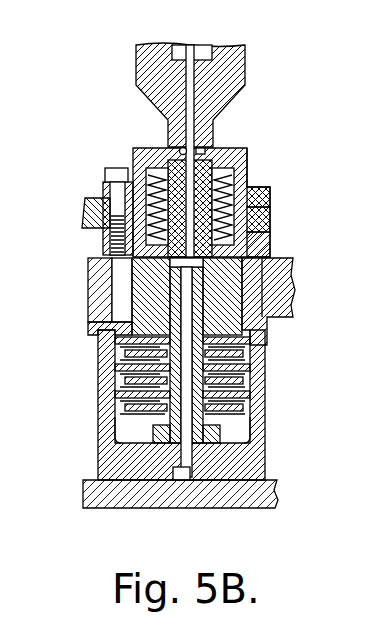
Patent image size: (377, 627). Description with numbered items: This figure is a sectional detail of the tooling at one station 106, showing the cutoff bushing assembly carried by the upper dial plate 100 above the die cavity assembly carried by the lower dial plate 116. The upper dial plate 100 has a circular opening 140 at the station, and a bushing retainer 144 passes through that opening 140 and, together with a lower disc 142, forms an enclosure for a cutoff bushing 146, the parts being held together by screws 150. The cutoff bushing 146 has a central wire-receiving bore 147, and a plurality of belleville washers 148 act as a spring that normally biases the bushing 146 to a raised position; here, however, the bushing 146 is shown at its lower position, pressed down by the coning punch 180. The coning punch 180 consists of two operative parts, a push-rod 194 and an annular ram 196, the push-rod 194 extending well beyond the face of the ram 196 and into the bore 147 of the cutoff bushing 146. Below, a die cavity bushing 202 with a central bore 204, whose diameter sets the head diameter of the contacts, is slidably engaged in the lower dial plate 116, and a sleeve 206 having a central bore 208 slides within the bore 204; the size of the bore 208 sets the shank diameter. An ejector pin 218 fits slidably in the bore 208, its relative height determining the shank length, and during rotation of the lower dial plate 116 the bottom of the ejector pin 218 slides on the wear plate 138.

The upper dial plate 100 is at (85, 202).
The station 106 is at (92, 147).
The lower dial plate 116 is at (293, 295).
The wear plate 138 is at (277, 495).
The circular opening 140 is at (255, 203).
The lower disc 142 is at (270, 248).
The bushing retainer 144 is at (247, 163).
The cutoff bushing 146 is at (248, 173).
The wire-receiving bore 147 is at (180, 148).
The belleville washers 148 is at (270, 225).
The screws 150 is at (105, 175).
The coning punch 180 is at (247, 71).
The push-rod 194 is at (183, 92).
The annular ram 196 is at (205, 150).
The die cavity bushing 202 is at (130, 348).
The central bore 204 is at (95, 263).
The sleeve 206 is at (268, 343).
The central bore 208 is at (185, 282).
The ejector pin 218 is at (168, 480).